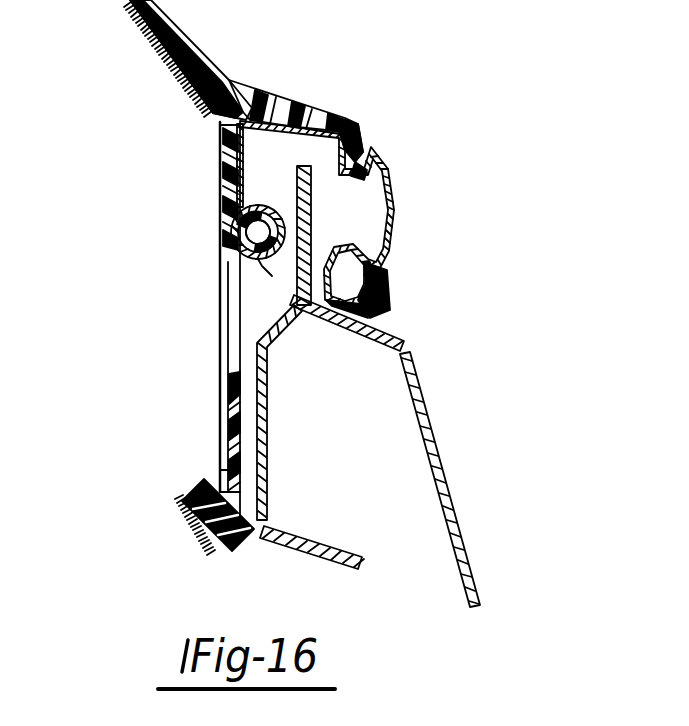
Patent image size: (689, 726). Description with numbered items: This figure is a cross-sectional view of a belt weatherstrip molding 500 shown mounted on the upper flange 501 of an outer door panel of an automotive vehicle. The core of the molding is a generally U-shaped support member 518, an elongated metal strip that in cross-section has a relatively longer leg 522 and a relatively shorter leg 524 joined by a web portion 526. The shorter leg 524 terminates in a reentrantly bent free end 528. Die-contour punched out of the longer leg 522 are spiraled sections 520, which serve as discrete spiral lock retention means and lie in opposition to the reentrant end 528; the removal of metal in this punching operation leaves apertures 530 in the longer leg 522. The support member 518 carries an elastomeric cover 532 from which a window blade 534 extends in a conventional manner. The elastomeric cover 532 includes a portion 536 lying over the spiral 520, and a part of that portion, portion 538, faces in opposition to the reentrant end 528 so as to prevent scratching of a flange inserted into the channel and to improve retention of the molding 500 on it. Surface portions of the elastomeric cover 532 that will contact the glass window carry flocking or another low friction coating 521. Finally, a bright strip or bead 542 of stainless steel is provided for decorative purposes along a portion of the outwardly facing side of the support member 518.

The molding 500 is at (198, 183).
The upper flange 501 is at (312, 187).
The support member 518 is at (219, 421).
The spiral lock retention means sections 520 is at (230, 232).
The flocking or low friction coating 521 is at (126, 14).
The longer leg 522 is at (217, 381).
The shorter leg 524 is at (390, 290).
The web portion 526 is at (250, 103).
The reentrantly bent free end 528 is at (336, 312).
The apertures 530 is at (218, 290).
The elastomeric cover 532 is at (217, 165).
The window blade 534 is at (193, 50).
The cover portion over spiral 536 is at (260, 268).
The cover portion facing reentrant end 538 is at (290, 312).
The bright strip or bead 542 is at (392, 210).